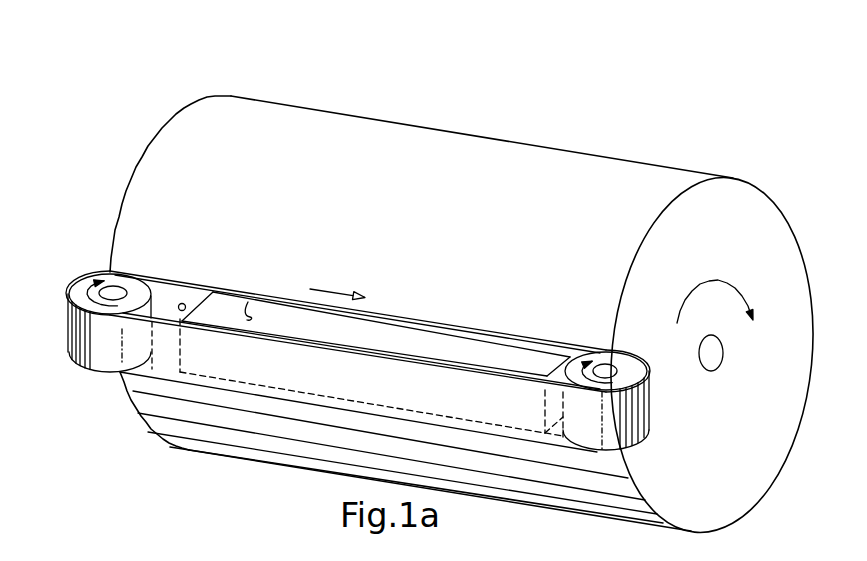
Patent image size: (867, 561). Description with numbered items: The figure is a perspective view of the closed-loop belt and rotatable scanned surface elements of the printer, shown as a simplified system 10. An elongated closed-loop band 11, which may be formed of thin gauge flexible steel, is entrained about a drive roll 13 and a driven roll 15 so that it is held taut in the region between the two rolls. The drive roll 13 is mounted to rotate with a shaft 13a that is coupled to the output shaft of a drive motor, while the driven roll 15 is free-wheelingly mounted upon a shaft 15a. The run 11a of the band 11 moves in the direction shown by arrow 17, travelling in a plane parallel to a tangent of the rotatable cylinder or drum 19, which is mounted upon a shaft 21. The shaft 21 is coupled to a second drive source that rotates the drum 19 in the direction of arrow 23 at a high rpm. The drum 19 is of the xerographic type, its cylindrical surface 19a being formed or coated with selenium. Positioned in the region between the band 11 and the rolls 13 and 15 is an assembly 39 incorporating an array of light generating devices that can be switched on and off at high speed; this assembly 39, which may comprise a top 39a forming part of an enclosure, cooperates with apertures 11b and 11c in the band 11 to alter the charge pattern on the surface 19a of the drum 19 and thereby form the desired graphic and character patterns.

The printing/transfer apparatus 10 is at (231, 40).
The closed-loop band 11 is at (108, 359).
The run of band 11a is at (200, 287).
The aperture 11b is at (180, 303).
The aperture 11c is at (248, 300).
The drive roll 13 is at (80, 278).
The shaft 13a is at (113, 291).
The driven roll 15 is at (625, 364).
The shaft 15a is at (603, 368).
The arrow 17 is at (330, 291).
The rotatable cylinder 19 is at (650, 141).
The cylindrical surface 19a is at (295, 100).
The shaft 21 is at (723, 354).
The arrow 23 is at (717, 279).
The assembly 39 is at (514, 323).
The top 39a is at (398, 337).